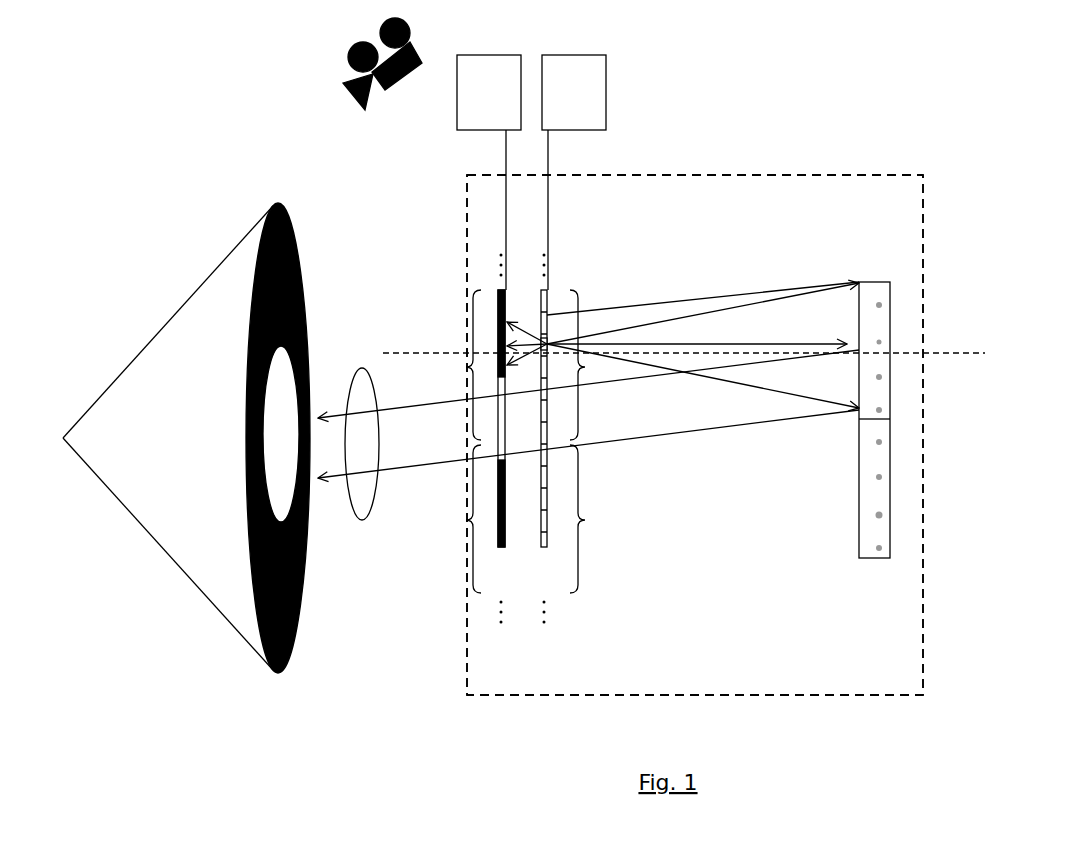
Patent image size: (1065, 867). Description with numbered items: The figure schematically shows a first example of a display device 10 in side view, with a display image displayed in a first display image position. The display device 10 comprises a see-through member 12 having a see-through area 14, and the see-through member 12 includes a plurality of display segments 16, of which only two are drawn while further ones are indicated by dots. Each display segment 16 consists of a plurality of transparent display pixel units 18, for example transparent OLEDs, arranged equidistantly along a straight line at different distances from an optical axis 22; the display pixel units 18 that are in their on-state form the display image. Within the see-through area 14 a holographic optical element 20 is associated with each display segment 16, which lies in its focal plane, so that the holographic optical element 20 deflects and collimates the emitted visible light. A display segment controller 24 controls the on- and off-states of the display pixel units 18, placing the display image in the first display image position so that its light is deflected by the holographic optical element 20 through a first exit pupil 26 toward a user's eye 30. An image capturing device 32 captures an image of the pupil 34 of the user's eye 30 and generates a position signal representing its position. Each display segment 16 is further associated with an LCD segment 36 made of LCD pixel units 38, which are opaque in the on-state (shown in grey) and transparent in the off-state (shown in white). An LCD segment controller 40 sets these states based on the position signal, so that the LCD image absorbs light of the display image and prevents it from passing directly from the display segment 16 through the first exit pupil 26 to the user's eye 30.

The display device 10 is at (893, 130).
The see-through member 12 is at (913, 207).
The see-through area 14 is at (695, 435).
The display segment 16 is at (585, 367).
The display pixel unit 18 is at (548, 537).
The holographic optical element 20 is at (880, 387).
The optical axis 22 is at (697, 355).
The display segment controller 24 is at (574, 172).
The first exit pupil 26 is at (362, 520).
The user's eye 30 is at (186, 471).
The image capturing device 32 is at (353, 66).
The pupil 34 is at (277, 470).
The LCD segment 36 is at (467, 367).
The LCD pixel unit 38 is at (498, 300).
The LCD segment controller 40 is at (489, 172).